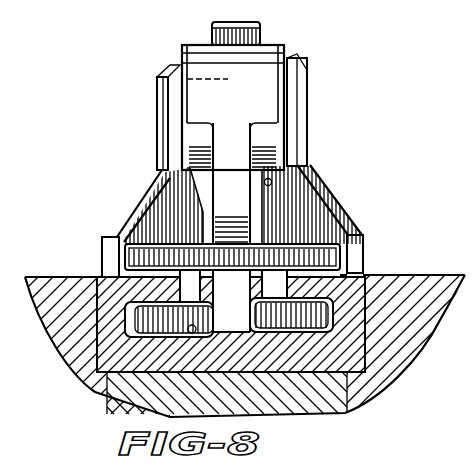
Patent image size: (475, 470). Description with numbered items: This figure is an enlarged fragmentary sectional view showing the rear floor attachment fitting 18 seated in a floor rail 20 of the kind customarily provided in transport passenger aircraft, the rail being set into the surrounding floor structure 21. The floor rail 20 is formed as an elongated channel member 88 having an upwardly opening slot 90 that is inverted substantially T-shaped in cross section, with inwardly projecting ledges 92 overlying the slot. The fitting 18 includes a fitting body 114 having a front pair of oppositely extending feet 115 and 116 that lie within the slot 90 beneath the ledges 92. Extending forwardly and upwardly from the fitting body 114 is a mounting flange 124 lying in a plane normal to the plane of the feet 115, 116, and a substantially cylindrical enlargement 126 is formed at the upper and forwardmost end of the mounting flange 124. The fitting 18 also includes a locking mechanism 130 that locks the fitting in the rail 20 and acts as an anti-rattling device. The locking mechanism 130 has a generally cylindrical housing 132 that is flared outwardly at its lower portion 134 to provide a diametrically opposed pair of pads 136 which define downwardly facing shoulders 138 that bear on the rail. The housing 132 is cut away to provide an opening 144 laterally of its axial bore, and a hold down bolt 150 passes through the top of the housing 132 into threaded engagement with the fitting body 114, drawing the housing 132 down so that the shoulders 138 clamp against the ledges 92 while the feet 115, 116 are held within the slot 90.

The rear floor attachment fitting 18 is at (353, 175).
The floor rail 20 is at (133, 384).
The ground surface 21 is at (33, 276).
The elongated channel member 88 is at (358, 353).
The upwardly opening slot 90 is at (187, 333).
The ledge 92 is at (157, 290).
The fitting body 114 is at (298, 138).
The foot 115 is at (147, 327).
The foot 116 is at (327, 320).
The mounting flange 124 is at (250, 227).
The cylindrical enlargement 126 is at (285, 53).
The locking mechanism 130 is at (152, 132).
The housing 132 is at (173, 102).
The flared portion 134 is at (143, 197).
The pad 136 is at (100, 240).
The downwardly facing shoulder 138 is at (98, 275).
The lateral opening 144 is at (272, 183).
The hold down bolt 150 is at (212, 36).